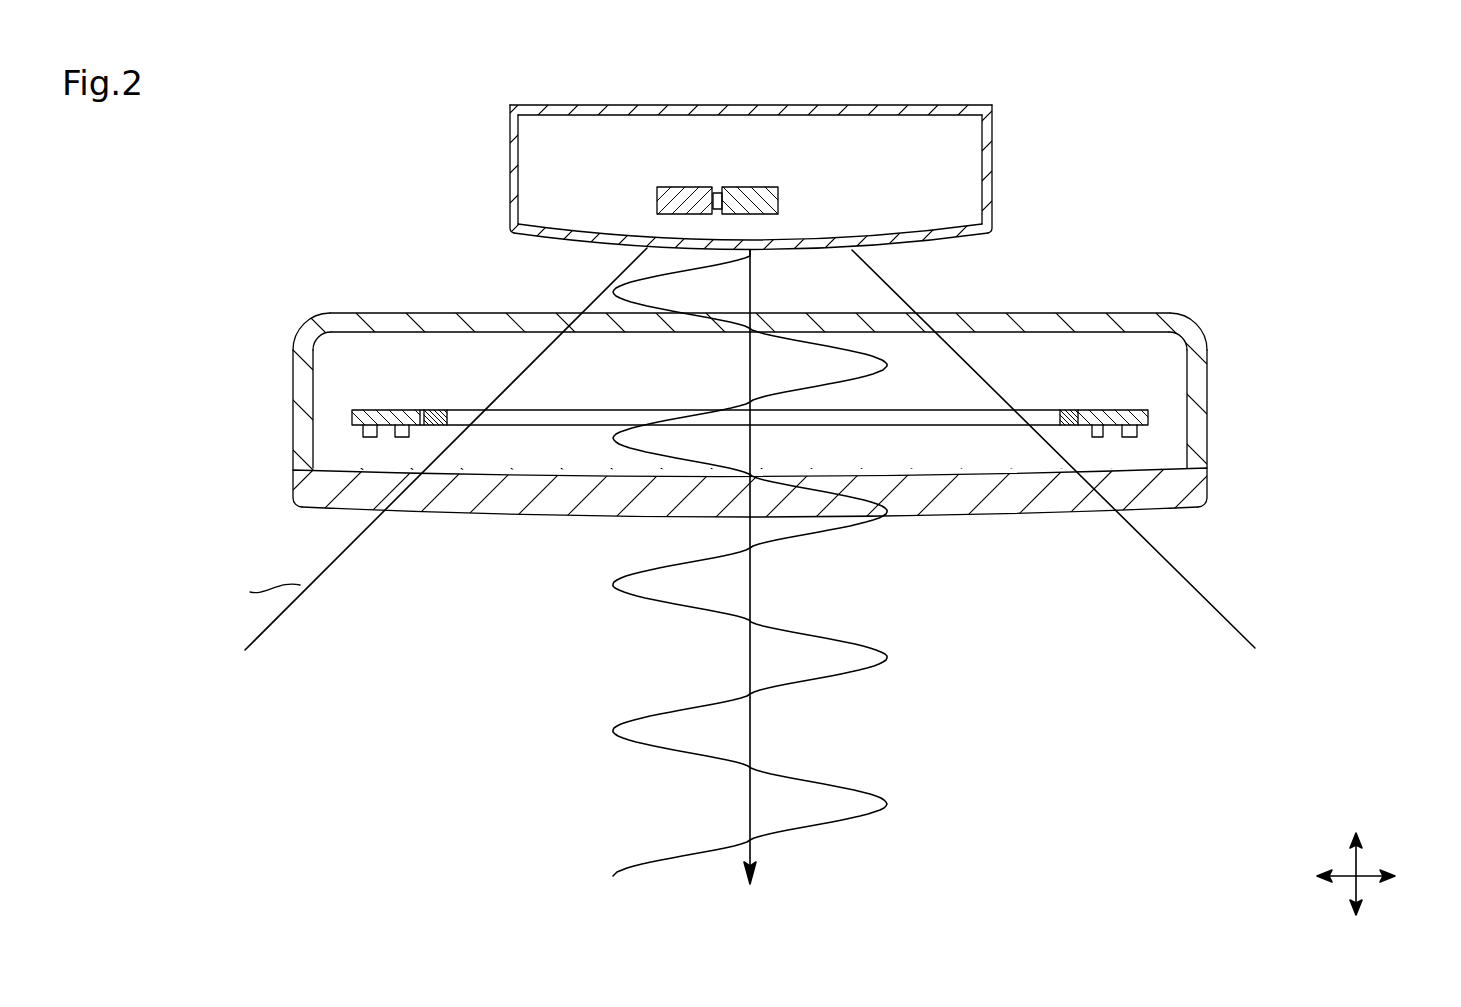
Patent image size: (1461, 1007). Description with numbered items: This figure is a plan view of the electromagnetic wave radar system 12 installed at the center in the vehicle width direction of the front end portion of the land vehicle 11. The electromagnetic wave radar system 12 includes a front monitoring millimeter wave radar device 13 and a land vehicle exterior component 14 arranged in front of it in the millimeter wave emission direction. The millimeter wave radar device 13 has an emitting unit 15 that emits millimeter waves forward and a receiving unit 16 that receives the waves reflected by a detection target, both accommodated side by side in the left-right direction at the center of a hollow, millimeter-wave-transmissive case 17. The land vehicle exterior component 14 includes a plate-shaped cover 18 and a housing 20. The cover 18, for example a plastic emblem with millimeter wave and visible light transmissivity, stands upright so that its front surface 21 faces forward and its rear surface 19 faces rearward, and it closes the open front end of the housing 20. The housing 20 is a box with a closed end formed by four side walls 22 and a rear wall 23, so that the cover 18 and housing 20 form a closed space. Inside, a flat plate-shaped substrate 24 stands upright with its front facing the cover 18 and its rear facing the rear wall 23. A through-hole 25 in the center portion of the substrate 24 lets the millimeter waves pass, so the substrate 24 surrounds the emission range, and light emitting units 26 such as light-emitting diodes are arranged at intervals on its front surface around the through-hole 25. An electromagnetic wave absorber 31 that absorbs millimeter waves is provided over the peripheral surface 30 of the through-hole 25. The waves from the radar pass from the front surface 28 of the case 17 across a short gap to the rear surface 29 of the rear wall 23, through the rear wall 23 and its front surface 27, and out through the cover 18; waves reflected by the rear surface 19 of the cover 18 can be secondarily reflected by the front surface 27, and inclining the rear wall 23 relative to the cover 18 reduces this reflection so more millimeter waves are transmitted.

The land vehicle 11 is at (1243, 130).
The electromagnetic wave radar system 12 is at (1172, 143).
The millimeter wave radar device 13 is at (957, 103).
The land vehicle exterior component 14 is at (1198, 326).
The emitting unit 15 is at (763, 188).
The receiving unit 16 is at (688, 188).
The case 17 is at (812, 105).
The cover 18 is at (1045, 517).
The rear surface 19 is at (905, 472).
The housing 20 is at (400, 312).
The front surface 21 is at (477, 518).
The side walls 22 is at (330, 372).
The rear wall 23 is at (1033, 312).
The substrate 24 is at (1112, 410).
The through-hole 25 is at (572, 418).
The light emitting units 26 is at (403, 437).
The front surface 27 is at (1013, 335).
The front surface 28 is at (578, 240).
The rear surface 29 is at (963, 312).
The peripheral surface 30 is at (425, 410).
The electromagnetic wave absorber 31 is at (447, 410).